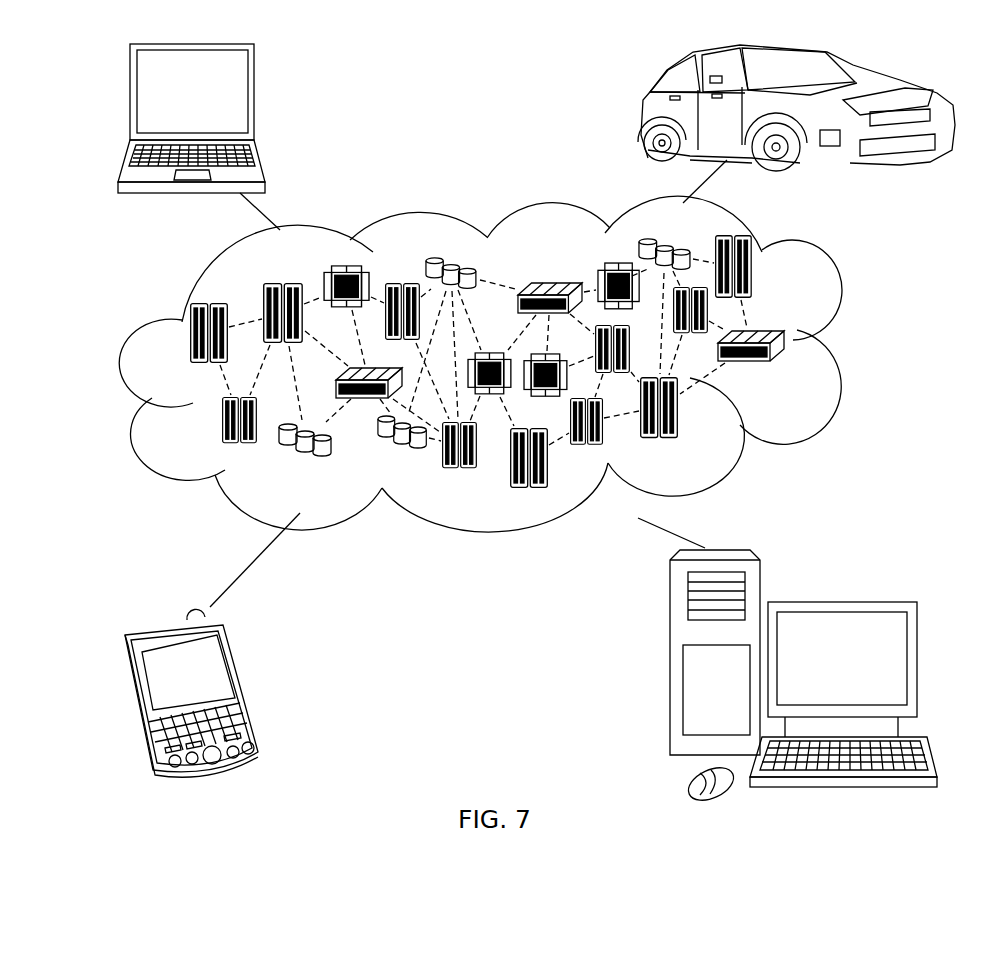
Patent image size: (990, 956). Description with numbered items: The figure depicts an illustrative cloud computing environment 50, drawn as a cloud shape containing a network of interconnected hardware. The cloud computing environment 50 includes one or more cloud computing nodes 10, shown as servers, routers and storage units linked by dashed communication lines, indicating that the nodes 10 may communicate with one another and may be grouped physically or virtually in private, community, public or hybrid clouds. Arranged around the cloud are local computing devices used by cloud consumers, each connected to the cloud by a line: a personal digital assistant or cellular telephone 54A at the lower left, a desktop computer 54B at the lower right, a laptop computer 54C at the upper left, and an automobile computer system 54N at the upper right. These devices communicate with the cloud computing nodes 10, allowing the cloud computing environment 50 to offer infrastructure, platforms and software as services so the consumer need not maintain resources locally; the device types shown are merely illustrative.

The cloud computing node 10 is at (794, 374).
The cloud computing environment 50 is at (838, 346).
The personal digital assistant or cellular telephone 54A is at (244, 683).
The desktop computer 54B is at (842, 601).
The laptop computer 54C is at (254, 99).
The automobile computer system 54N is at (640, 112).